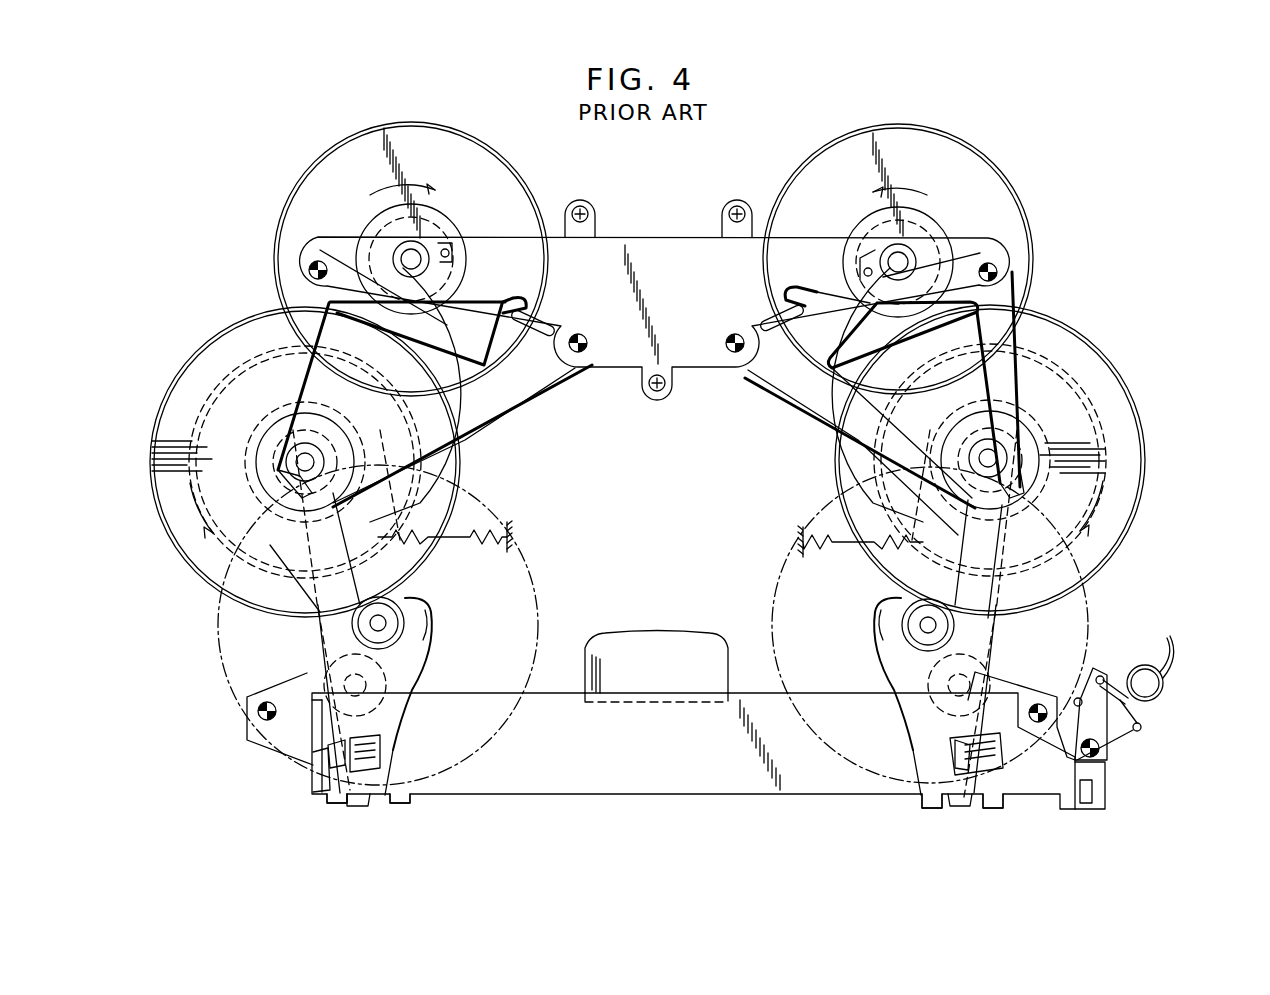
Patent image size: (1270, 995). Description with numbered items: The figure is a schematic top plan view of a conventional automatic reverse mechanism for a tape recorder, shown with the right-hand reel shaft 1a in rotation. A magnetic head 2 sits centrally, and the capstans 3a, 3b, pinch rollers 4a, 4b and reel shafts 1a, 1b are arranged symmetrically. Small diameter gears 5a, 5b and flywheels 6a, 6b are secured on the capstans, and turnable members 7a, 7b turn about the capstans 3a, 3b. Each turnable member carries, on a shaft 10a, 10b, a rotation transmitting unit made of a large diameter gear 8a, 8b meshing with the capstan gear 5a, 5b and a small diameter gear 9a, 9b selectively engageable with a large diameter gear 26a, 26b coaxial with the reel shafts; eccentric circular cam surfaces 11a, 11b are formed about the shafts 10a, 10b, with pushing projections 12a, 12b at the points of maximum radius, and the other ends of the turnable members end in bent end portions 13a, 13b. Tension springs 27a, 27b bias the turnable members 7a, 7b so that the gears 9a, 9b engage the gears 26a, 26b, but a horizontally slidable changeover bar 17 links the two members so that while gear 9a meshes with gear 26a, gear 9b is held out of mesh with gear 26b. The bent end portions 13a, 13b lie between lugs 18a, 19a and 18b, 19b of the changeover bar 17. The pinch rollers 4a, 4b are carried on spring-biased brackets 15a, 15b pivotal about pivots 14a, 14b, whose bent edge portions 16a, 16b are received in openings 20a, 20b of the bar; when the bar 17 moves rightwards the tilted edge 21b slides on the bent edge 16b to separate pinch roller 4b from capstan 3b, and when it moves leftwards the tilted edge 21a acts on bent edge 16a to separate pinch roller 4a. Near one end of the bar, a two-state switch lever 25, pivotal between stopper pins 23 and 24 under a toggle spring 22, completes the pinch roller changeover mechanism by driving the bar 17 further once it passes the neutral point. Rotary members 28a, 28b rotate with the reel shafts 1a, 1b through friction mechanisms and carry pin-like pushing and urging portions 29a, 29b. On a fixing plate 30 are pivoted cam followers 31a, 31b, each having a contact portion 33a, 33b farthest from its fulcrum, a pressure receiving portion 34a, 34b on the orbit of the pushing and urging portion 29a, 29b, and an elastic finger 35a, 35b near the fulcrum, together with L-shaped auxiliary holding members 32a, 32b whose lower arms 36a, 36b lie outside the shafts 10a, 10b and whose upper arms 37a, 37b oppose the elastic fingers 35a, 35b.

The right-hand reel shaft 1a is at (912, 248).
The left-hand reel shaft 1b is at (405, 248).
The magnetic head 2 is at (650, 632).
The right-hand capstan 3a is at (902, 620).
The left-hand capstan 3b is at (405, 618).
The right-hand pinch roller 4a is at (988, 652).
The left-hand pinch roller 4b is at (316, 650).
The small diameter gear 5a is at (960, 607).
The small diameter gear 5b is at (362, 600).
The flywheel 6a is at (1088, 595).
The flywheel 6b is at (216, 620).
The turnable member 7a is at (872, 652).
The turnable member 7b is at (437, 655).
The large diameter gear 8a is at (1122, 378).
The large diameter gear 8b is at (182, 368).
The small diameter gear 9a is at (1063, 406).
The small diameter gear 9b is at (228, 415).
The shaft 10a is at (978, 442).
The shaft 10b is at (318, 445).
The eccentric circular cam surface 11a is at (1132, 440).
The eccentric circular cam surface 11b is at (182, 492).
The pushing projection 12a is at (1010, 505).
The pushing projection 12b is at (283, 530).
The bent end portion 13a is at (957, 808).
The bent end portion 13b is at (357, 808).
The pivot 14a is at (1046, 700).
The pivot 14b is at (256, 708).
The bracket 15a is at (1032, 692).
The bracket 15b is at (283, 680).
The bent edge portion 16a is at (946, 752).
The bent edge portion 16b is at (356, 752).
The changeover bar 17 is at (652, 796).
The lug 18a is at (995, 808).
The lug 18b is at (330, 803).
The lug 19a is at (925, 808).
The lug 19b is at (405, 803).
The opening 20a is at (907, 775).
The opening 20b is at (385, 758).
The tilted edge 21a is at (1040, 787).
The tilted edge 21b is at (315, 768).
The toggle spring 22 is at (1165, 675).
The stopper pin 23 is at (1102, 668).
The stopper pin 24 is at (1138, 733).
The two-state switch lever 25 is at (1117, 690).
The large diameter gear 26a is at (1022, 226).
The large diameter gear 26b is at (296, 200).
The tension spring 27a is at (812, 530).
The tension spring 27b is at (512, 530).
The rotary member 28a is at (870, 216).
The rotary member 28b is at (452, 215).
The pushing and urging portion 29a is at (860, 270).
The pushing and urging portion 29b is at (453, 254).
The fixing plate 30 is at (656, 240).
The cam follower 31a is at (805, 405).
The cam follower 31b is at (515, 400).
The auxiliary holding member 32a is at (1002, 350).
The auxiliary holding member 32b is at (312, 347).
The contact portion 33a is at (950, 538).
The contact portion 33b is at (358, 536).
The pressure receiving portion 34a is at (905, 335).
The pressure receiving portion 34b is at (432, 326).
The elastic finger 35a is at (765, 312).
The elastic finger 35b is at (550, 312).
The lower arm 36a is at (1032, 500).
The lower arm 36b is at (273, 422).
The upper arm 37a is at (778, 292).
The upper arm 37b is at (530, 294).